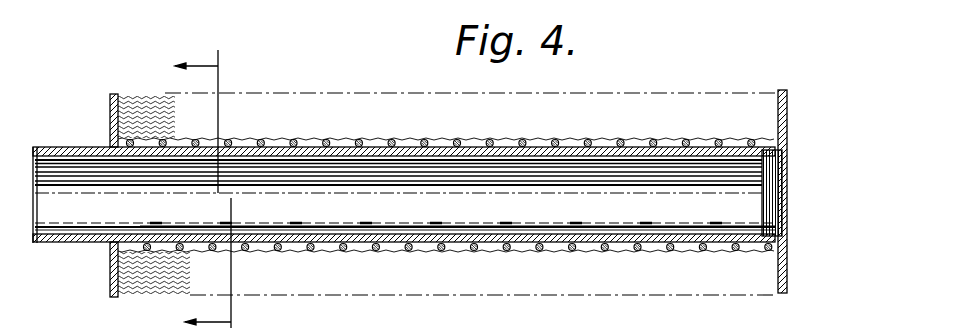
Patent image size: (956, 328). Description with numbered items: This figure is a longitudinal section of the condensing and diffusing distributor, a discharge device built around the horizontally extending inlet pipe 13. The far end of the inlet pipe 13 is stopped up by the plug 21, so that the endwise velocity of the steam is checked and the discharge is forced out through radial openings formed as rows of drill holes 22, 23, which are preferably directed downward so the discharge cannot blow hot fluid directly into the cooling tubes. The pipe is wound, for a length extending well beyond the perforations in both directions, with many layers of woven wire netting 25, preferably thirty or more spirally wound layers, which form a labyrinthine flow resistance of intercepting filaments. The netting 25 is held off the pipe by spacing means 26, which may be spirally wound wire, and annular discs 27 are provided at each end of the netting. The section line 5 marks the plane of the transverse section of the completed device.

The transverse section line 5 is at (470, 185).
The inlet pipe 13 is at (43, 147).
The plug 21 is at (775, 175).
The drill holes 22 is at (331, 244).
The drill holes 23 is at (330, 228).
The netting 25 is at (140, 135).
The spacing means 26 is at (362, 140).
The annular discs 27 is at (114, 115).